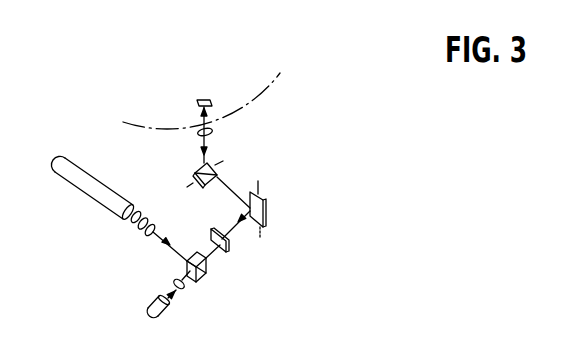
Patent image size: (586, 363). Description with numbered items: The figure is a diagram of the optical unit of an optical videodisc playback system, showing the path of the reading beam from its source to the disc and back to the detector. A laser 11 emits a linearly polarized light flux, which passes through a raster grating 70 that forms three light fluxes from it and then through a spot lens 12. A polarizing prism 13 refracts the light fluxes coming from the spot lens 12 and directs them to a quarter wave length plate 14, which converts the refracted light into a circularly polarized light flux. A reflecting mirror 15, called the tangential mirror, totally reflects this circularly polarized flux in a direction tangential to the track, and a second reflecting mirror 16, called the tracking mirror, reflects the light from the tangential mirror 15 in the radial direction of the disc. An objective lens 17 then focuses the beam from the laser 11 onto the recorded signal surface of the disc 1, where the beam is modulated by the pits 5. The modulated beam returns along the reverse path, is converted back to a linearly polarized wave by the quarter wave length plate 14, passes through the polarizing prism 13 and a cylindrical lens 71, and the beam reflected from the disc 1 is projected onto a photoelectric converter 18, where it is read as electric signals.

The disc 1 is at (264, 89).
The pits 5 is at (203, 99).
The laser 11 is at (83, 175).
The spot lens 12 is at (150, 233).
The polarizing prism 13 is at (205, 272).
The quarter wave length plate 14 is at (228, 243).
The reflecting mirror (tangential mirror) 15 is at (262, 210).
The reflecting mirror (tracking mirror) 16 is at (197, 173).
The objective lens 17 is at (213, 132).
The photoelectric converter 18 is at (152, 313).
The raster grating 70 is at (137, 222).
The cylindrical lens 71 is at (182, 289).